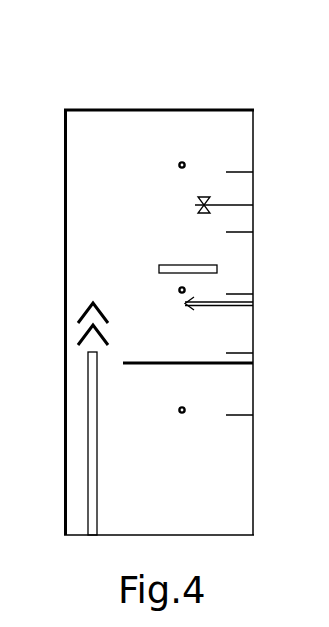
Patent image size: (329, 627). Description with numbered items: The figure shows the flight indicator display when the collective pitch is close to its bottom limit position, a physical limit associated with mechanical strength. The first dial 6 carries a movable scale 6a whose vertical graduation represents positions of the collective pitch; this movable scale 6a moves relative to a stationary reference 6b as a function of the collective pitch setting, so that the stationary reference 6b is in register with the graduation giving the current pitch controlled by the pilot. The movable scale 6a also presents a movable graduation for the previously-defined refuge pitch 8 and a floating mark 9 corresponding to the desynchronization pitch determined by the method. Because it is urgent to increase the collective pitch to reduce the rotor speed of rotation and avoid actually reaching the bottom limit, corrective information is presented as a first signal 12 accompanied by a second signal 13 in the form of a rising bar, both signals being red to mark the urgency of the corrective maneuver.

The first dial 6 is at (163, 110).
The movable scale 6a is at (197, 427).
The stationary reference 6b is at (223, 307).
The refuge pitch 8 is at (217, 268).
The floating mark 9 is at (237, 205).
The first signal 12 is at (93, 293).
The second signal 13 is at (88, 378).